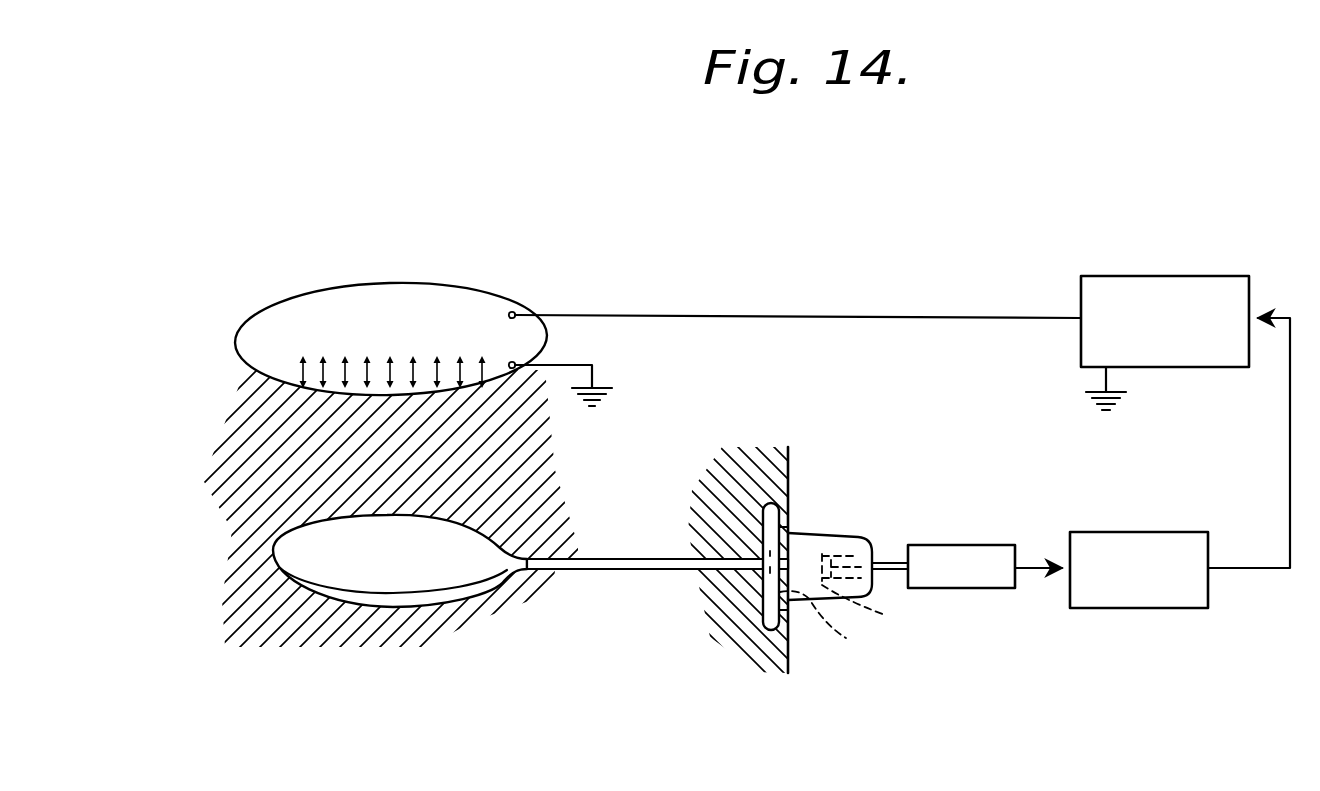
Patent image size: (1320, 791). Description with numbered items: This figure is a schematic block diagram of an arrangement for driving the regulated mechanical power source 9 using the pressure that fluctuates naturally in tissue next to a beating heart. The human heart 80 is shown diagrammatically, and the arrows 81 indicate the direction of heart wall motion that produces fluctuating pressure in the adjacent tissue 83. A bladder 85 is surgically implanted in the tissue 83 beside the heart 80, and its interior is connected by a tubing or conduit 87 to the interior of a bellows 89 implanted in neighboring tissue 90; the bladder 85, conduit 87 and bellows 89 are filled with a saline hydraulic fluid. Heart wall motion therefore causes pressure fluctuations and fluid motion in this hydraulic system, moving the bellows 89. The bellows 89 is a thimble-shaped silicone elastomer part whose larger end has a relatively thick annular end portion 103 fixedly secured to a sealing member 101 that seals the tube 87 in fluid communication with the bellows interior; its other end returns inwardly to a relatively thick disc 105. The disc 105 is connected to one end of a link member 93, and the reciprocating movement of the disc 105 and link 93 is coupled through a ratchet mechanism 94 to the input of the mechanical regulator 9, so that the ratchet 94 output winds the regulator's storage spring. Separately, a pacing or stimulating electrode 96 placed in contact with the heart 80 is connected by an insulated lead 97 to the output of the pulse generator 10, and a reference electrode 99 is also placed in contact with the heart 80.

The regulated mechanical power source 9 is at (1158, 619).
The pulse generator 10 is at (1168, 262).
The human heart 80 is at (244, 301).
The arrows 81 is at (332, 358).
The adjacent tissue 83 is at (300, 425).
The bladder 85 is at (288, 534).
The tubing or conduit 87 is at (628, 572).
The bellows 89 is at (824, 524).
The neighboring tissue 90 is at (733, 480).
The link member 93 is at (902, 560).
The ratchet mechanism 94 is at (984, 544).
The pacing or stimulating electrode 96 is at (509, 313).
The lead 97 is at (809, 312).
The reference electrode 99 is at (513, 362).
The sealing member 101 is at (771, 502).
The annular end portion 103 is at (841, 624).
The disc 105 is at (886, 595).